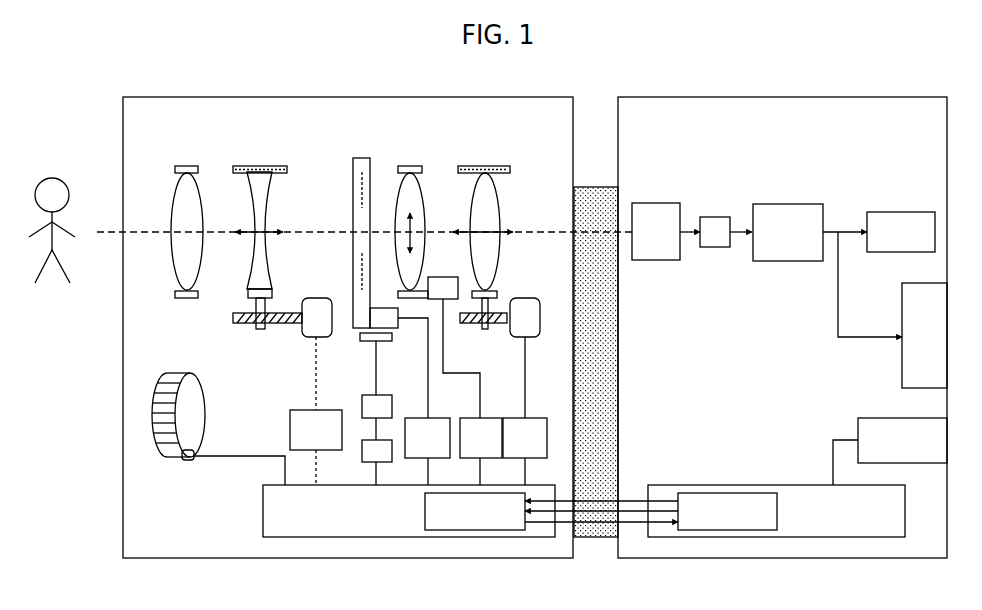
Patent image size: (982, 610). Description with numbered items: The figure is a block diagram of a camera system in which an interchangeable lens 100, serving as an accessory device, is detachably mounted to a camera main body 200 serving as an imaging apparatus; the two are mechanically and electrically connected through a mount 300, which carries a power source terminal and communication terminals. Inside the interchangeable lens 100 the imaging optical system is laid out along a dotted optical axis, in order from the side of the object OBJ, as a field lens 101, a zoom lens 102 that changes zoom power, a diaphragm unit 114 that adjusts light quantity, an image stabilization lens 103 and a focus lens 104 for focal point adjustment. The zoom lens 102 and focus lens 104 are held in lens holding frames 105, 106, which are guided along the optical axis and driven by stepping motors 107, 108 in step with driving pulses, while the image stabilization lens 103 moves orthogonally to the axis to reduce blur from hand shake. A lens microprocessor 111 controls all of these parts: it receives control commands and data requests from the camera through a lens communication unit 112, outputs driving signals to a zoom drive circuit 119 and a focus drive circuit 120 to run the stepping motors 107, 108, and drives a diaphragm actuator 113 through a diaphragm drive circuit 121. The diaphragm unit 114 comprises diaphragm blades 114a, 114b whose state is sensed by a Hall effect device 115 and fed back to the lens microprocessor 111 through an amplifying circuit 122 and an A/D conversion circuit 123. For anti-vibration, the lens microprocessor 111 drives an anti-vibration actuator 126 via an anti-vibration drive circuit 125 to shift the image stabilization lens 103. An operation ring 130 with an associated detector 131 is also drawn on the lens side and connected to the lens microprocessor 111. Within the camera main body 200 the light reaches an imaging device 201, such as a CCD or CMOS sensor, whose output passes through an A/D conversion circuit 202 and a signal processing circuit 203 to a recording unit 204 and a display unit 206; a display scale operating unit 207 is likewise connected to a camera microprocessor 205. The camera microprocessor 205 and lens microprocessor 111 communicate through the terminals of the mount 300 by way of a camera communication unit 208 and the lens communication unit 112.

The interchangeable lens 100 is at (348, 307).
The camera main body 200 is at (782, 307).
The mount 300 is at (596, 296).
The object OBJ is at (53, 207).
The field lens 101 is at (167, 231).
The zoom lens 102 is at (280, 250).
The image stabilization lens 103 is at (423, 232).
The focus lens 104 is at (503, 235).
The lens holding frame 105 is at (258, 166).
The lens holding frame 106 is at (482, 166).
The stepping motor 107 is at (282, 333).
The stepping motor 108 is at (500, 358).
The lens microprocessor 111 is at (383, 511).
The lens communication unit 112 is at (475, 540).
The diaphragm actuator 113 is at (399, 363).
The diaphragm unit 114 is at (368, 224).
The diaphragm blade 114a is at (358, 193).
The diaphragm blade 114b is at (358, 265).
The Hall effect device 115 is at (368, 364).
The zoom drive circuit 119 is at (301, 411).
The focus drive circuit 120 is at (532, 434).
The diaphragm drive circuit 121 is at (433, 434).
The amplifying circuit 122 is at (388, 404).
The A/D conversion circuit 123 is at (391, 462).
The anti-vibration drive circuit 125 is at (487, 434).
The anti-vibration actuator 126 is at (454, 329).
The operation ring 130 is at (178, 397).
The ring position detector 131 is at (203, 449).
The imaging device 201 is at (666, 209).
The A/D conversion circuit 202 is at (726, 213).
The signal processing circuit 203 is at (827, 251).
The recording unit 204 is at (901, 212).
The camera microprocessor 205 is at (776, 490).
The display unit 206 is at (924, 320).
The display scale operating unit 207 is at (907, 417).
The camera communication unit 208 is at (727, 490).